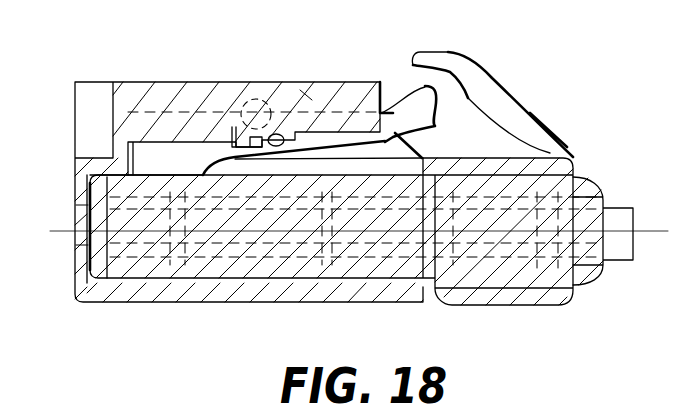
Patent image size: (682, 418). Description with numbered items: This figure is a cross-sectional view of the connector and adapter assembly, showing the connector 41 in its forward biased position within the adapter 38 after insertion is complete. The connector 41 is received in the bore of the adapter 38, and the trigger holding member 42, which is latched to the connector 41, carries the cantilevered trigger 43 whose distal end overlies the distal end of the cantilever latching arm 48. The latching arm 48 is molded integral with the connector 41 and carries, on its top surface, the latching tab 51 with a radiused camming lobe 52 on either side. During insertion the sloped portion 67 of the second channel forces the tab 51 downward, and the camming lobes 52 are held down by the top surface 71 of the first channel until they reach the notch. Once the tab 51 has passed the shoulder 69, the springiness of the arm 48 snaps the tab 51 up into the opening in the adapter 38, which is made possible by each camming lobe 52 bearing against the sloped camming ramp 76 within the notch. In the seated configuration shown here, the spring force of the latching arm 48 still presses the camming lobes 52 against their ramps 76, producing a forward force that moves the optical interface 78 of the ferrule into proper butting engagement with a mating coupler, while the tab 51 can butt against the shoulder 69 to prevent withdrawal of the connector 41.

The adapter member 38 is at (160, 82).
The top surface of channel 71 is at (160, 140).
The sloped camming ramp 76 is at (244, 134).
The latching tab 51 is at (298, 80).
The shoulder 69 is at (304, 85).
The sloped portion 67 is at (386, 90).
The cantilever latching arm 48 is at (422, 108).
The camming lobe 52 is at (386, 143).
The cantilevered trigger 43 is at (490, 74).
The trigger holding member 42 is at (492, 307).
The connector member 41 is at (604, 284).
The optical interface 78 is at (93, 256).